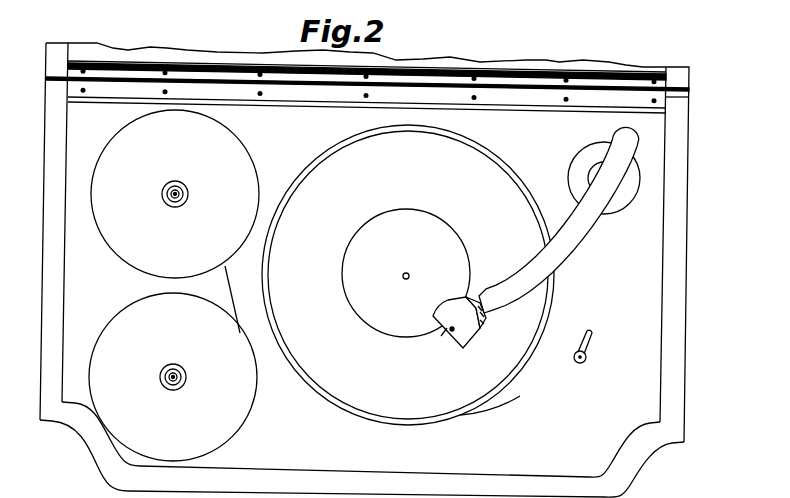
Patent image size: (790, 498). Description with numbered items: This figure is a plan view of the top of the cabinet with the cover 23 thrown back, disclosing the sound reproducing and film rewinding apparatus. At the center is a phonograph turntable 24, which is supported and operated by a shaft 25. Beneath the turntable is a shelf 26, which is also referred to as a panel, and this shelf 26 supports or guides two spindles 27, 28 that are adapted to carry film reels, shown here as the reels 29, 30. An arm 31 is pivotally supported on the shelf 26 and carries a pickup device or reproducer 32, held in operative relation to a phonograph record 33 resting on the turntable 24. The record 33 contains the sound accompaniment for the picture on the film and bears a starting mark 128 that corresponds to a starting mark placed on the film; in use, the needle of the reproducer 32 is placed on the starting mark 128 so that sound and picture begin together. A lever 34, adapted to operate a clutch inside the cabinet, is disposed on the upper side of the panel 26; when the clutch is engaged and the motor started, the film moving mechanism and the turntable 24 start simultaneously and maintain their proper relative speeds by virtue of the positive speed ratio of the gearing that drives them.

The cover 23 is at (688, 87).
The phonograph turntable 24 is at (492, 152).
The shaft 25 is at (412, 265).
The shelf 26 is at (290, 458).
The spindle 27 is at (182, 374).
The spindle 28 is at (184, 191).
The film carrying reel 29 is at (246, 141).
The film carrying reel 30 is at (260, 384).
The arm 31 is at (589, 236).
The pickup device 32 is at (446, 302).
The phonograph record 33 is at (509, 169).
The lever 34 is at (579, 344).
The starting mark 128 is at (501, 375).